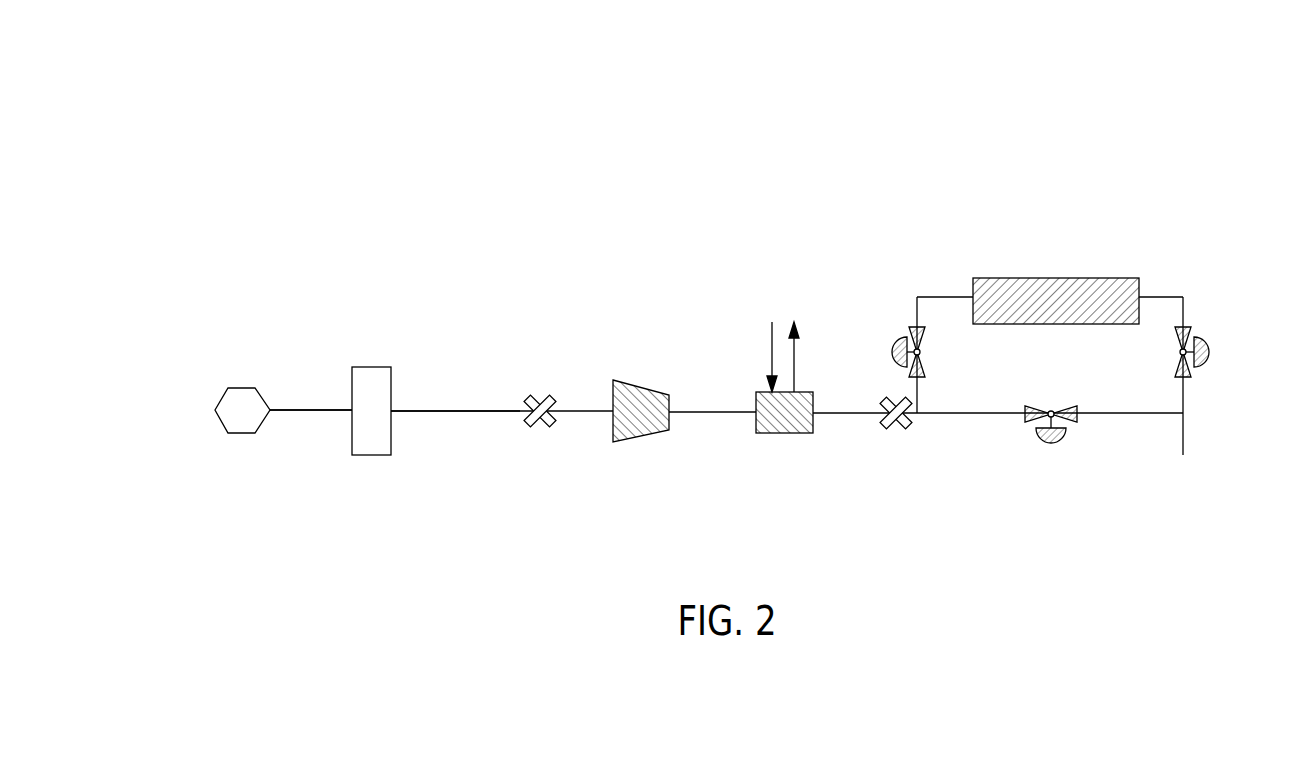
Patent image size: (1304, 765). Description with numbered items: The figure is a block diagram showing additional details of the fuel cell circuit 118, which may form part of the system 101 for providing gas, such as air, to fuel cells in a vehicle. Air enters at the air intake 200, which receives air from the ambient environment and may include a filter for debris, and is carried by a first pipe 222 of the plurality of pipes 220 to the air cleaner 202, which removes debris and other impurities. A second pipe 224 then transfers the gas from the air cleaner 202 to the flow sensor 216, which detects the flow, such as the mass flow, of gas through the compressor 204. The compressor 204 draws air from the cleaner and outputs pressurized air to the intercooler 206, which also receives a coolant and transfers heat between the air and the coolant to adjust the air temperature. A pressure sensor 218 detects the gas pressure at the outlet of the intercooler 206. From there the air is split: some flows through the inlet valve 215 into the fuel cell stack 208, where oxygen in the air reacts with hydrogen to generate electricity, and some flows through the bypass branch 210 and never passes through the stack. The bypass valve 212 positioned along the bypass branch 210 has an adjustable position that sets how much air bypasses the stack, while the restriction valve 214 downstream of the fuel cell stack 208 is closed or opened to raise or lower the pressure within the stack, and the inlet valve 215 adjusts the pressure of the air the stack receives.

The system 101 is at (250, 122).
The fuel cell circuit 118 is at (229, 240).
The air intake 200 is at (242, 447).
The air cleaner 202 is at (362, 456).
The compressor 204 is at (640, 442).
The intercooler 206 is at (778, 433).
The fuel cell stack 208 is at (1028, 278).
The bypass branch 210 is at (978, 414).
The bypass valve 212 is at (1052, 444).
The restriction valve 214 is at (1206, 340).
The inlet valve 215 is at (896, 340).
The flow sensor 216 is at (524, 428).
The pressure sensor 218 is at (888, 426).
The plurality of pipes 220 is at (300, 356).
The first pipe 222 is at (292, 412).
The second pipe 224 is at (417, 410).